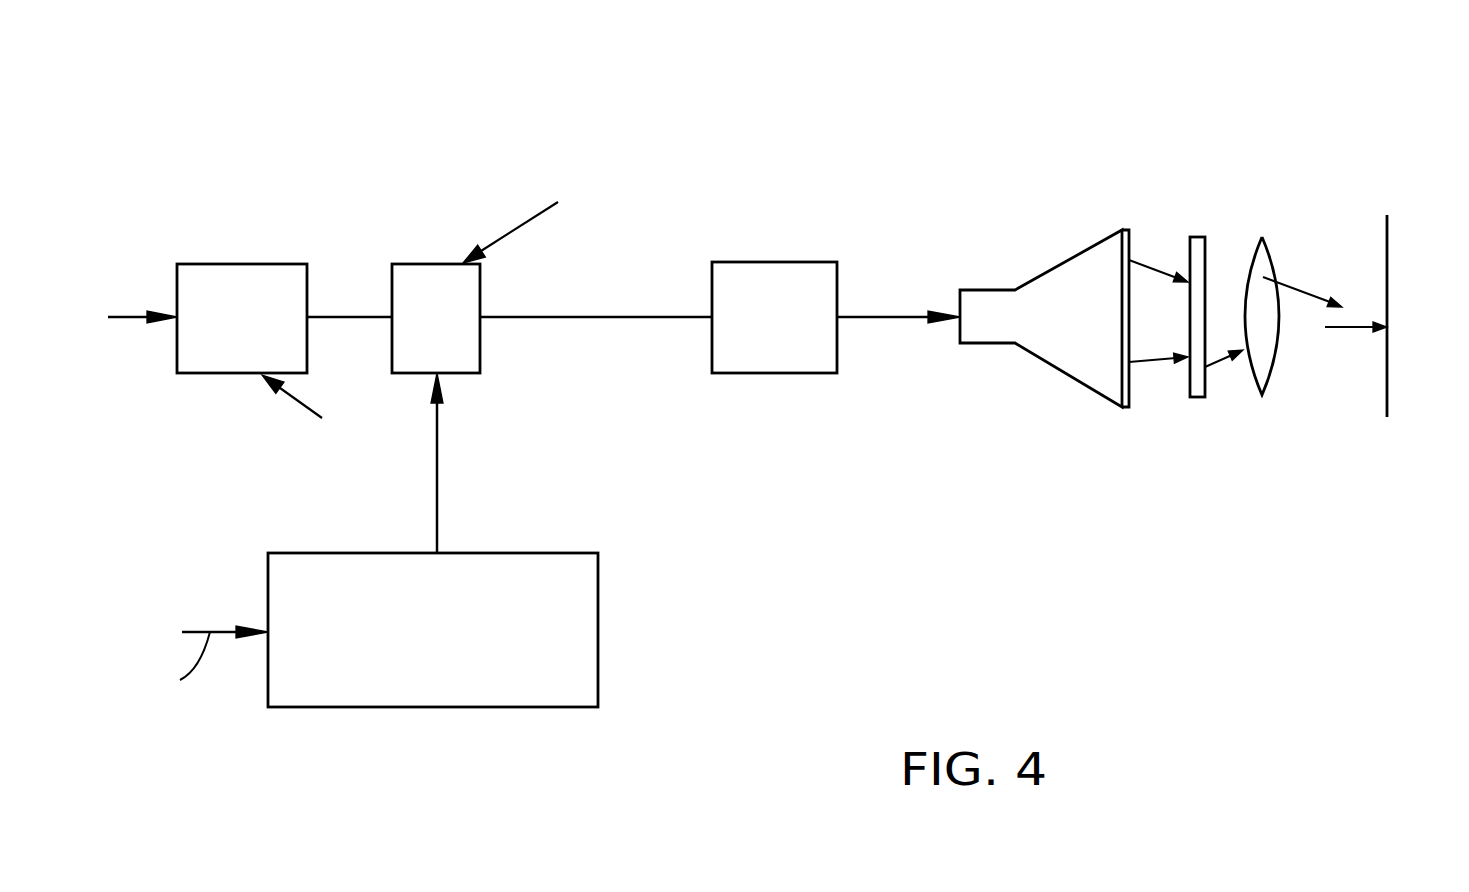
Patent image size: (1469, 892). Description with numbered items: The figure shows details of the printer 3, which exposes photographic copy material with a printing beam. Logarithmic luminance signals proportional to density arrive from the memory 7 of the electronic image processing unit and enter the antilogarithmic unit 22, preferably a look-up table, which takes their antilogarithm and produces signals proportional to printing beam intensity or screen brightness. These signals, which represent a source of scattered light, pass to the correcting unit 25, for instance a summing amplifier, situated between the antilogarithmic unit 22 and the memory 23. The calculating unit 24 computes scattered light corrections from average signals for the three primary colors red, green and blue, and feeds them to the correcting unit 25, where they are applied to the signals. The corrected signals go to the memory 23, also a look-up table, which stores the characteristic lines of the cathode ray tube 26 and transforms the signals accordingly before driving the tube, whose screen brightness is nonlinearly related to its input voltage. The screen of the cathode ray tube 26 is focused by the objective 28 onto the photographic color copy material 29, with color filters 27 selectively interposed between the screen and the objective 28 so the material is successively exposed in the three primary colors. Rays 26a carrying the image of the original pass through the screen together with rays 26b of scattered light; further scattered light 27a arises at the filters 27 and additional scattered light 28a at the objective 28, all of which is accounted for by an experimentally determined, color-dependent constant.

The printer 3 is at (755, 106).
The memory 7 is at (130, 322).
The antilogarithmic unit 22 is at (248, 277).
The memory 23 is at (790, 277).
The calculating unit 24 is at (538, 565).
The correcting unit 25 is at (425, 275).
The cathode ray tube 26 is at (1073, 265).
The rays 26a is at (1150, 265).
The rays of scattered light 26b is at (1147, 363).
The color filters 27 is at (1205, 250).
The scattered light 27a is at (1222, 363).
The objective 28 is at (1268, 253).
The scattered light 28a is at (1302, 297).
The photographic color copy material 29 is at (1388, 242).